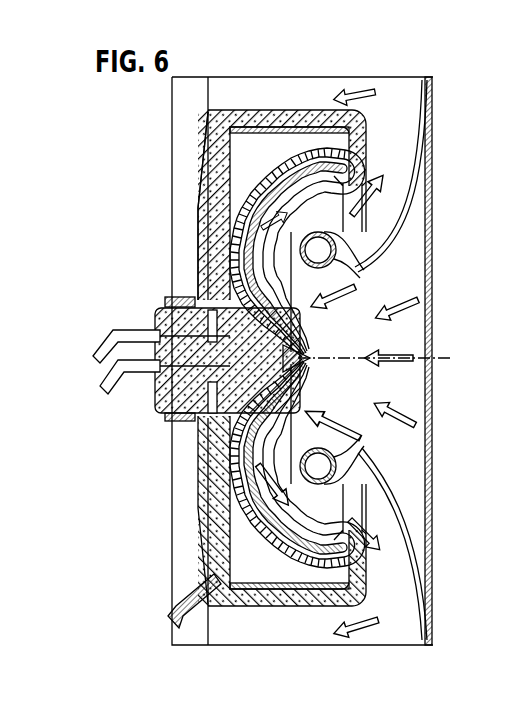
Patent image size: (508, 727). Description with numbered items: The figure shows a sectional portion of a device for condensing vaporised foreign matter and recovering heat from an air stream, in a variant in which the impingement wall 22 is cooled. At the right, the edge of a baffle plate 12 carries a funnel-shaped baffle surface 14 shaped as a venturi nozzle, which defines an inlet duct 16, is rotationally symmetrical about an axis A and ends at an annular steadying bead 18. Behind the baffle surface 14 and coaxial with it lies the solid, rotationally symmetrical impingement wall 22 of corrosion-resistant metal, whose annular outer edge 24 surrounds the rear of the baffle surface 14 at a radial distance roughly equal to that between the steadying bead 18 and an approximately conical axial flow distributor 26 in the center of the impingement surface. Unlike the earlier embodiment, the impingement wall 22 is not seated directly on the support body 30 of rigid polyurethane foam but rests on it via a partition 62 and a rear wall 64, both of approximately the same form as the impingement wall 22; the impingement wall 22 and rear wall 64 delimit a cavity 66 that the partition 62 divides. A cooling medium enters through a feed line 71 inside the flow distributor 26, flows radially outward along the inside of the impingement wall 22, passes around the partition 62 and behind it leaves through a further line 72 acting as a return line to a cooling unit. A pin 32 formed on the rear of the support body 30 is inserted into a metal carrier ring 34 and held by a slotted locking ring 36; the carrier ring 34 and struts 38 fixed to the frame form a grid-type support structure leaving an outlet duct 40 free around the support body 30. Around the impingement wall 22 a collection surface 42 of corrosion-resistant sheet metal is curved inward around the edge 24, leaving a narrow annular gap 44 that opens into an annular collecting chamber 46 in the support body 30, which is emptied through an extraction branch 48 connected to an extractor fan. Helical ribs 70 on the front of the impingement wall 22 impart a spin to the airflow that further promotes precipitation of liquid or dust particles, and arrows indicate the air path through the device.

The baffle plate 12 is at (442, 112).
The baffle surface 14 is at (431, 205).
The inlet duct 16 is at (418, 277).
The steadying bead 18 is at (298, 288).
The impingement wall 22 is at (295, 253).
The annular outer edge 24 is at (337, 173).
The axial flow distributor 26 is at (302, 353).
The support body 30 is at (215, 488).
The pin 32 is at (160, 405).
The carrier ring 34 is at (197, 262).
The slotted locking ring 36 is at (168, 300).
The strut 38 is at (181, 112).
The outlet duct 40 is at (279, 104).
The collection surface 42 is at (352, 507).
The annular gap 44 is at (335, 542).
The collecting chamber 46 is at (262, 163).
The extraction branch 48 is at (176, 608).
The partition 62 is at (250, 455).
The rear wall 64 is at (216, 450).
The cavity 66 is at (300, 470).
The helical rib 70 is at (250, 432).
The feed line 71 is at (104, 390).
The further line 72 is at (108, 352).
The axis A is at (445, 357).